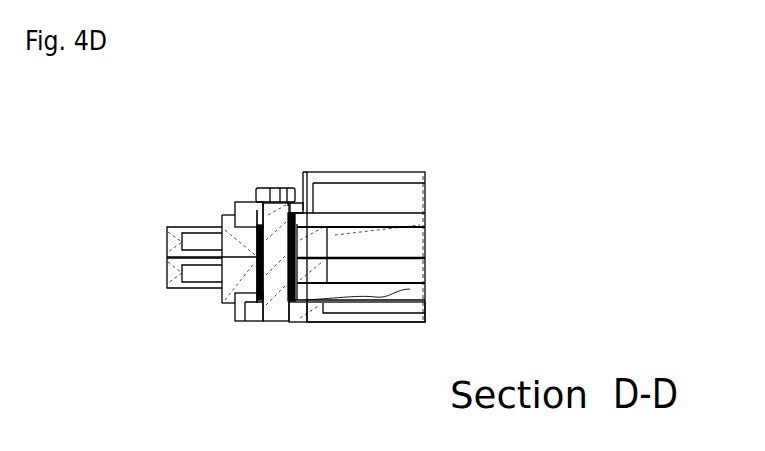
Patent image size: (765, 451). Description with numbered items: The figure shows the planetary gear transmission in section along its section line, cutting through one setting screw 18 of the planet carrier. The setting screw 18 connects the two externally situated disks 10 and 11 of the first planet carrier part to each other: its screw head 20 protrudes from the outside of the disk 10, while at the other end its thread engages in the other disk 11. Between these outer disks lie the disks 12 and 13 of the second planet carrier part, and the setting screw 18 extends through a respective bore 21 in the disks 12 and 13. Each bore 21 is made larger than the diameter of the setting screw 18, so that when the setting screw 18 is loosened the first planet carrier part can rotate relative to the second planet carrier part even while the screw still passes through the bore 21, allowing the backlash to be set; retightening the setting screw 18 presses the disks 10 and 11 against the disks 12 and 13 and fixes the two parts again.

The externally situated disk 10 is at (303, 205).
The externally situated disk 11 is at (302, 309).
The disk 12 is at (248, 218).
The disk 13 is at (245, 297).
The setting screw 18 is at (285, 316).
The screw head 20 is at (244, 194).
The bore 21 is at (320, 223).